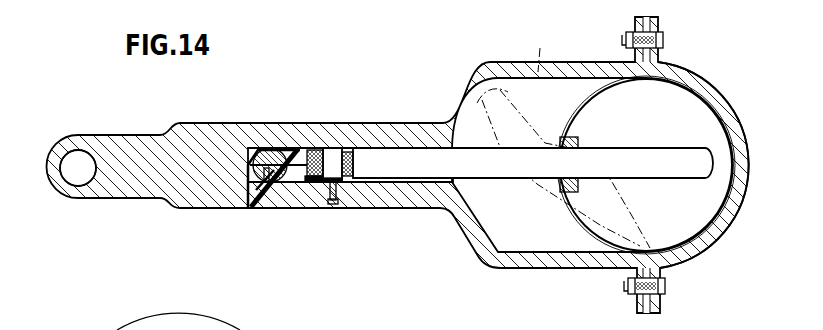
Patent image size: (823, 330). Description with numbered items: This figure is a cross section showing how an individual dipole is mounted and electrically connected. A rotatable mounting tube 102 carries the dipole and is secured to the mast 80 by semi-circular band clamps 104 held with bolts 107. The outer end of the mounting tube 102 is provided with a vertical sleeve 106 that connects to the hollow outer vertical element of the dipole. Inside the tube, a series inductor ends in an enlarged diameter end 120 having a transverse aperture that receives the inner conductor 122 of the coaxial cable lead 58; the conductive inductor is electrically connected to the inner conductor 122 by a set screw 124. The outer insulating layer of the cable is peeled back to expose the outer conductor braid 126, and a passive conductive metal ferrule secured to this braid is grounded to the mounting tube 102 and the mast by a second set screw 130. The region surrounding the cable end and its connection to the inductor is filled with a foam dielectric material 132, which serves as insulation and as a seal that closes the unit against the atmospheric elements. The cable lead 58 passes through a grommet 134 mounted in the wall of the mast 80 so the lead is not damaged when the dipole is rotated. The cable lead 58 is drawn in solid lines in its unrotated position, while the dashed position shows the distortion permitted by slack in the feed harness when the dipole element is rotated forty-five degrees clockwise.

The coaxial cable lead 58 is at (491, 203).
The mast 80 is at (715, 218).
The mounting tube 102 is at (203, 135).
The semi-circular band clamp 104 is at (736, 133).
The vertical sleeve 106 is at (62, 146).
The bolt 107 is at (663, 42).
The enlarged diameter end 120 is at (270, 150).
The inner conductor 122 is at (305, 150).
The set screw 124 is at (259, 208).
The outer conductor braid 126 is at (348, 150).
The set screw 130 is at (333, 206).
The foam dielectric material 132 is at (257, 212).
The grommet 134 is at (579, 141).